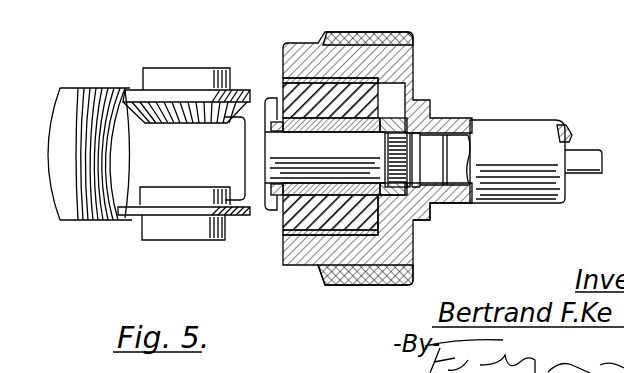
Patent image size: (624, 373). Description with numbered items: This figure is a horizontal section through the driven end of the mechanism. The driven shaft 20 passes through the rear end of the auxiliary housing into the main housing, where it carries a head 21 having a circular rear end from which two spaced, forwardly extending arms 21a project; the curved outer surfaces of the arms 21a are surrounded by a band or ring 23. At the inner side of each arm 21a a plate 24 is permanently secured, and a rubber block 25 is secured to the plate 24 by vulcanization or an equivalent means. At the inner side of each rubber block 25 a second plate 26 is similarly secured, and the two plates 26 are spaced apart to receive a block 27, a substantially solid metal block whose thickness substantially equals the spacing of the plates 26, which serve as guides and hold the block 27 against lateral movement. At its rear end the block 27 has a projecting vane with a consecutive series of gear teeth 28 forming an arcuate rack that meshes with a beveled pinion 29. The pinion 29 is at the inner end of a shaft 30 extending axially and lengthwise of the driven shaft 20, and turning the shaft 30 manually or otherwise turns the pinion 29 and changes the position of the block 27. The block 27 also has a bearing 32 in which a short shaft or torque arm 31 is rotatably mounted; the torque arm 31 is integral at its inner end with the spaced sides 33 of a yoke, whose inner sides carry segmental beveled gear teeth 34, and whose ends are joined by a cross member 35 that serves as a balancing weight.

The driven shaft 20 is at (505, 131).
The head 21 is at (415, 243).
The arms 21a is at (350, 56).
The band or ring 23 is at (363, 278).
The plate 24 is at (310, 80).
The rubber block 25 is at (378, 101).
The second plate 26 is at (408, 129).
The block 27 is at (278, 120).
The gear teeth 28 is at (400, 127).
The beveled pinion 29 is at (417, 218).
The shaft 30 is at (580, 177).
The short shaft or torque arm 31 is at (295, 162).
The bearing 32 is at (310, 130).
The yoke sides 33 is at (252, 98).
The segmental beveled gear teeth 34 is at (165, 123).
The cross member 35 is at (72, 157).